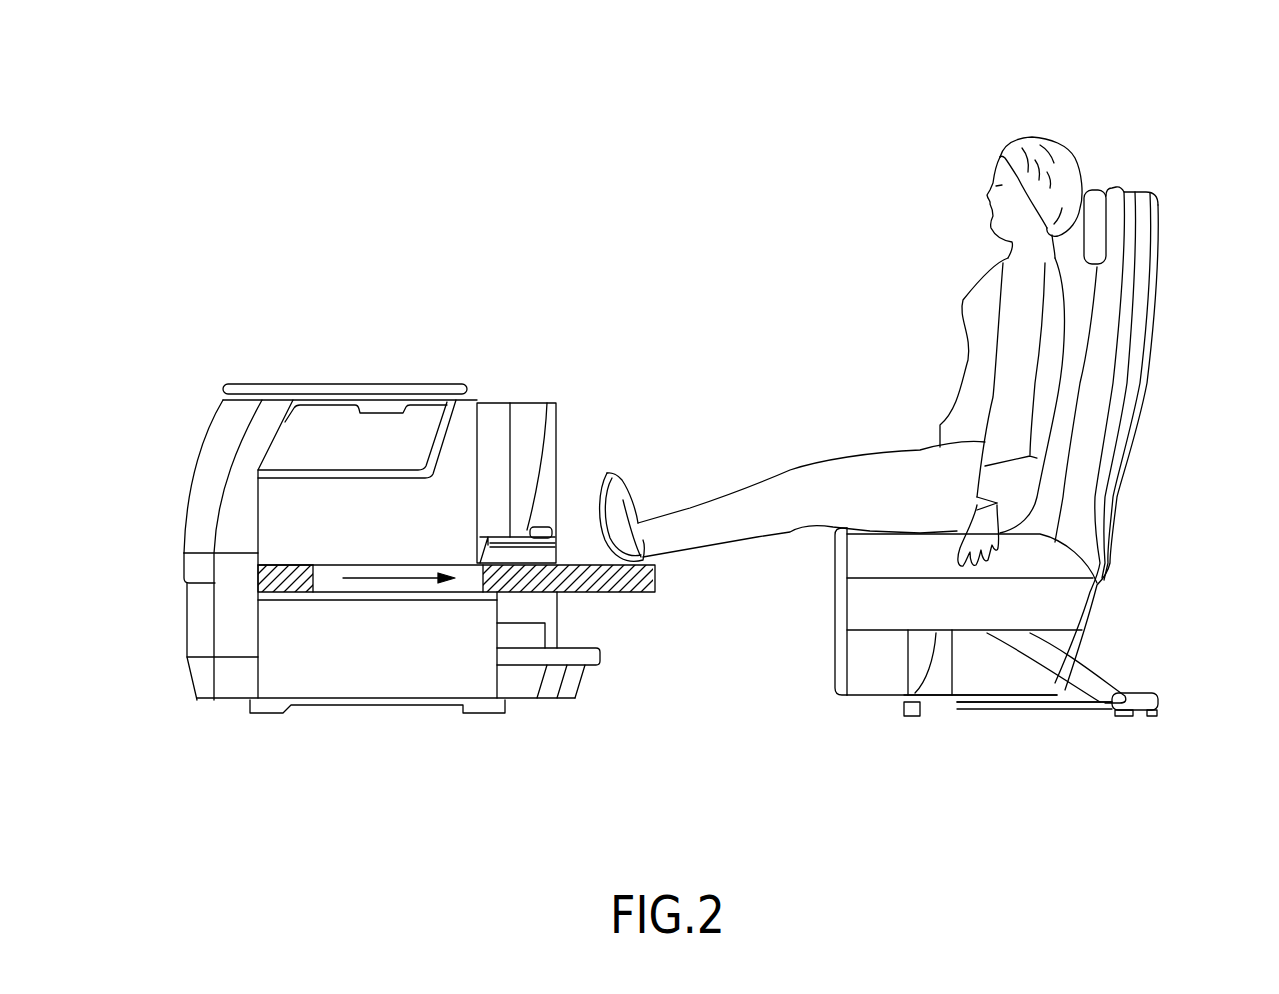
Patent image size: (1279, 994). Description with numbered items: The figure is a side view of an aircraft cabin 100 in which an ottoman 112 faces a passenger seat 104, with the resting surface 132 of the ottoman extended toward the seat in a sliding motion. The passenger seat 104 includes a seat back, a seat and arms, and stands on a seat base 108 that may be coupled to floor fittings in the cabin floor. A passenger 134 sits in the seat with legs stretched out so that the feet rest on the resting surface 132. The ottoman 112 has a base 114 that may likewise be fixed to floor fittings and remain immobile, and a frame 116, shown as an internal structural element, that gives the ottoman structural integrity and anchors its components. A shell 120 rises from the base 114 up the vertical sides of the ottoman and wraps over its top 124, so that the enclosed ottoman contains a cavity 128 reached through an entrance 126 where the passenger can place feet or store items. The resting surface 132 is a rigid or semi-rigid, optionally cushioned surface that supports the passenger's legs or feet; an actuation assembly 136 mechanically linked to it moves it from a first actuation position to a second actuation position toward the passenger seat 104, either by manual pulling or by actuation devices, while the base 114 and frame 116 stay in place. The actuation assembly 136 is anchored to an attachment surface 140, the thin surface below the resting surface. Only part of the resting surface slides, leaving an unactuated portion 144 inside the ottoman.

The aircraft cabin 100 is at (282, 45).
The passenger seat 104 is at (1174, 221).
The seat base 108 is at (990, 718).
The ottoman 112 is at (422, 350).
The base 114 is at (283, 712).
The frame 116 is at (527, 637).
The shell 120 is at (248, 453).
The top 124 is at (322, 378).
The entrance 126 is at (572, 543).
The cavity 128 is at (305, 500).
The resting surface 132 is at (595, 596).
The passenger 134 is at (1089, 131).
The actuation assembly 136 is at (392, 590).
The attachment surface 140 is at (282, 597).
The unactuated portion 144 is at (290, 565).